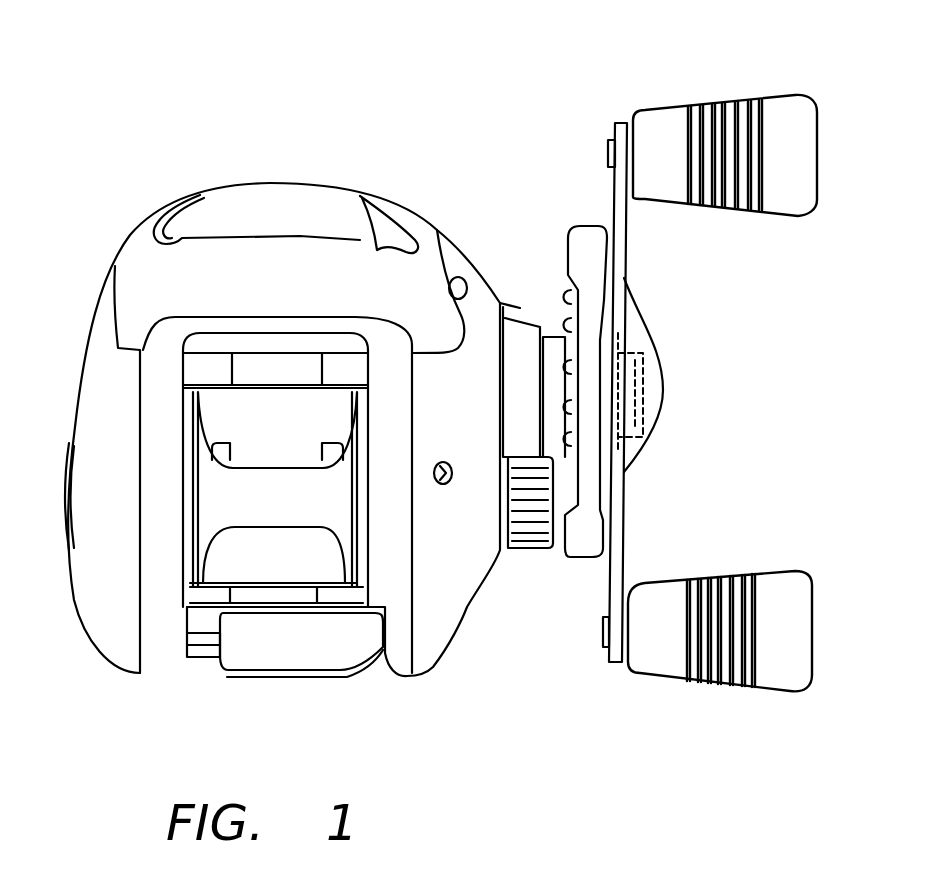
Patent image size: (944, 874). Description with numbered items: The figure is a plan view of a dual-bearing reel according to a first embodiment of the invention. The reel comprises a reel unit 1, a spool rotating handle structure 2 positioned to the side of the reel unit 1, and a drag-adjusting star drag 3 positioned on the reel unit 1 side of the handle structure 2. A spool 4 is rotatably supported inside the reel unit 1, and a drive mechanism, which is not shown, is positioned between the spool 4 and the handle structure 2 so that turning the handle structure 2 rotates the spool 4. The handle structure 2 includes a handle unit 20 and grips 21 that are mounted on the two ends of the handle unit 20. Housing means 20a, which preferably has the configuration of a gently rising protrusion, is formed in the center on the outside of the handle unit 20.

The reel unit 1 is at (118, 232).
The spool rotating handle structure 2 is at (622, 270).
The drag-adjusting star drag 3 is at (578, 240).
The spool 4 is at (263, 508).
The handle unit 20 is at (658, 422).
The housing means 20a is at (657, 350).
The grips 21 is at (665, 123).